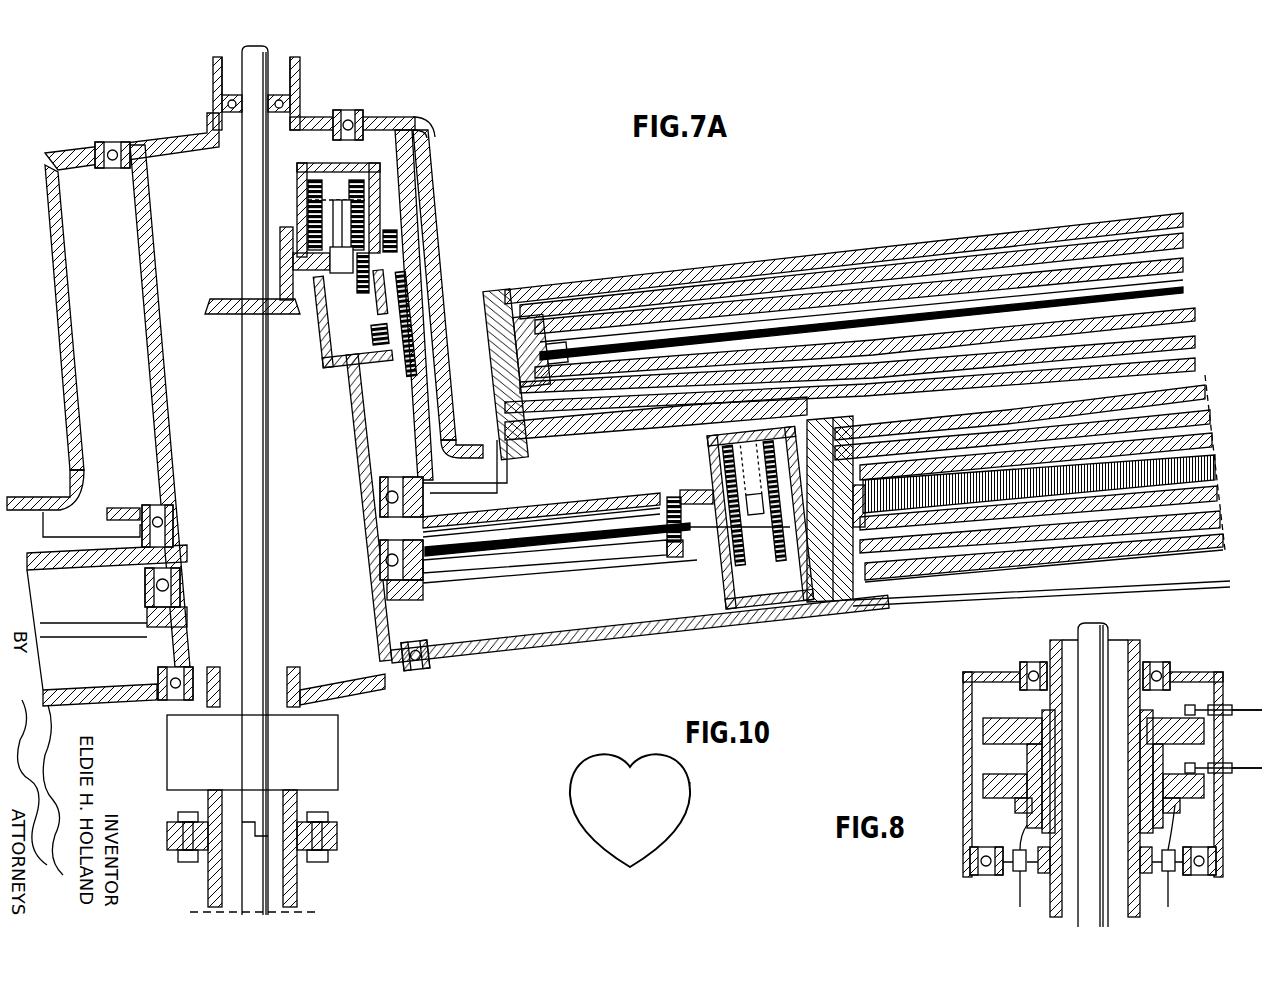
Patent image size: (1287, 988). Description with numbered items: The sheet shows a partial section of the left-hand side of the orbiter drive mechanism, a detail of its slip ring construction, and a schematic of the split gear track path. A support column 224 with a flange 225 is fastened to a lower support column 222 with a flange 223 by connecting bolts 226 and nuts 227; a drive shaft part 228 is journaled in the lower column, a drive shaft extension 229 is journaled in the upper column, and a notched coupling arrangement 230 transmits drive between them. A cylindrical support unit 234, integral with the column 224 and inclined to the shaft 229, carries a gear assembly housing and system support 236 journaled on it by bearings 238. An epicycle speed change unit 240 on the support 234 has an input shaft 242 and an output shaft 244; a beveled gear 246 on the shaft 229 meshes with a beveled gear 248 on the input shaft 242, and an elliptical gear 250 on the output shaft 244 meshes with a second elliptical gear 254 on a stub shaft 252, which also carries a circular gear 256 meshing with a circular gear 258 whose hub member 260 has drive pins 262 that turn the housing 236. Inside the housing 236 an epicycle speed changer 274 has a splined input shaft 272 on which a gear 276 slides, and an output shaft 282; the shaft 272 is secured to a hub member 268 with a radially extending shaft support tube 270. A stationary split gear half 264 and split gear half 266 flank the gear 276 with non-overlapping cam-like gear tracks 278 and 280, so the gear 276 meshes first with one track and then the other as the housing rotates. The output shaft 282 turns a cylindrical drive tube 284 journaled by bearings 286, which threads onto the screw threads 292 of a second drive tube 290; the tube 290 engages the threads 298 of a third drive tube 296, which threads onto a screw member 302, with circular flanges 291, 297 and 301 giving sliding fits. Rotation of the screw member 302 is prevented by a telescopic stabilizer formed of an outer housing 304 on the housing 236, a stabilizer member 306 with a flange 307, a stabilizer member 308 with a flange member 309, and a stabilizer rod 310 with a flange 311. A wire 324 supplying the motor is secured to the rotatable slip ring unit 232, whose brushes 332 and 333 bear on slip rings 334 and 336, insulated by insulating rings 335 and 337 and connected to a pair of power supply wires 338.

In FIG. 7A, the lower support column 222 is at (300, 876).
In FIG. 7A, the flange 223 is at (335, 846).
In FIG. 7A, the support column 224 is at (297, 77).
In FIG. 8, the support column 224 is at (1140, 649).
In FIG. 7A, the flange 225 is at (335, 823).
In FIG. 7A, the connecting bolts 226 is at (178, 817).
In FIG. 7A, the nuts 227 is at (330, 856).
In FIG. 7A, the drive shaft part 228 is at (270, 913).
In FIG. 7A, the drive shaft extension 229 is at (242, 82).
In FIG. 8, the drive shaft extension 229 is at (1108, 633).
In FIG. 7A, the notched coupling arrangement 230 is at (262, 830).
In FIG. 7A, the slip ring unit 232 is at (338, 756).
In FIG. 8, the slip ring unit 232 is at (963, 736).
In FIG. 7A, the cylindrical support unit 234 is at (143, 178).
In FIG. 7A, the gear assembly housing and system support 236 is at (432, 152).
In FIG. 7A, the bearings 238 is at (352, 118).
In FIG. 7A, the epicycle speed change unit 240 is at (330, 355).
In FIG. 7A, the input shaft 242 is at (325, 290).
In FIG. 7A, the output shaft 244 is at (395, 228).
In FIG. 7A, the beveled gear 246 is at (220, 320).
In FIG. 7A, the beveled gear 248 is at (300, 315).
In FIG. 7A, the elliptical gear 250 is at (430, 246).
In FIG. 7A, the stub shaft 252 is at (380, 323).
In FIG. 7A, the second elliptical gear 254 is at (405, 365).
In FIG. 7A, the circular gear 256 is at (432, 275).
In FIG. 7A, the circular gear 258 is at (413, 470).
In FIG. 7A, the hub member 260 is at (112, 508).
In FIG. 7A, the drive pins 262 is at (85, 570).
In FIG. 7A, the split gear half 264 is at (600, 500).
In FIG. 7A, the split gear half 266 is at (560, 570).
In FIG. 7A, the hub member 268 is at (145, 592).
In FIG. 7A, the shaft support tube 270 is at (380, 536).
In FIG. 7A, the input shaft 272 is at (520, 565).
In FIG. 7A, the speed changer 274 is at (710, 486).
In FIG. 7A, the gear 276 is at (670, 558).
In FIG. 7A, the cam-like gear track 278 is at (672, 511).
In FIG. 10, the cam-like gear track 278 is at (690, 783).
In FIG. 7A, the cam-like gear track 280 is at (685, 558).
In FIG. 10, the cam-like gear track 280 is at (571, 791).
In FIG. 7A, the output shaft 282 is at (790, 565).
In FIG. 7A, the cylindrical drive tube 284 is at (960, 426).
In FIG. 7A, the bearings 286 is at (835, 426).
In FIG. 7A, the second drive tube 290 is at (1210, 416).
In FIG. 7A, the circular flange 291 is at (840, 605).
In FIG. 7A, the screw threads 292 is at (1205, 394).
In FIG. 7A, the third drive tube 296 is at (1218, 492).
In FIG. 7A, the circular flange 297 is at (870, 560).
In FIG. 7A, the threads 298 is at (1220, 508).
In FIG. 7A, the circular flange 301 is at (890, 560).
In FIG. 7A, the screw member 302 is at (1215, 462).
In FIG. 7A, the outer housing 304 is at (690, 262).
In FIG. 7A, the stabilizer member 306 is at (1182, 241).
In FIG. 7A, the flange 307 is at (492, 321).
In FIG. 7A, the stabilizer member 308 is at (1188, 267).
In FIG. 7A, the flange member 309 is at (515, 350).
In FIG. 7A, the stabilizer rod 310 is at (1193, 291).
In FIG. 7A, the flange 311 is at (530, 365).
In FIG. 8, the wire 324 is at (1260, 713).
In FIG. 8, the brush 332 is at (1210, 706).
In FIG. 8, the brush 333 is at (1210, 771).
In FIG. 8, the slip ring 334 is at (1020, 718).
In FIG. 8, the insulating ring 335 is at (1150, 716).
In FIG. 8, the slip ring 336 is at (985, 786).
In FIG. 8, the insulating ring 337 is at (1175, 798).
In FIG. 8, the power supply wires 338 is at (1018, 886).